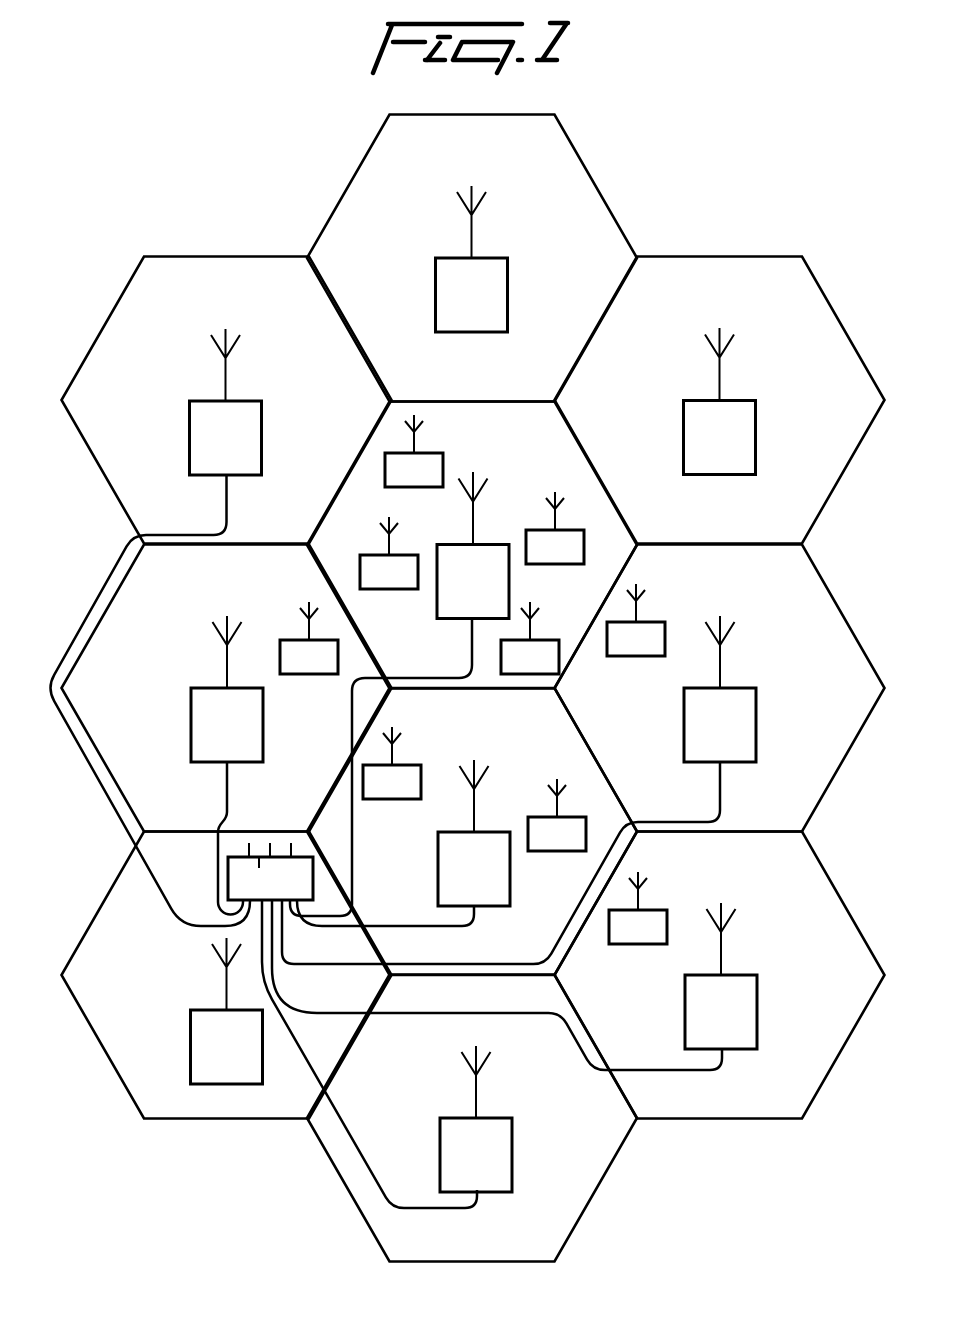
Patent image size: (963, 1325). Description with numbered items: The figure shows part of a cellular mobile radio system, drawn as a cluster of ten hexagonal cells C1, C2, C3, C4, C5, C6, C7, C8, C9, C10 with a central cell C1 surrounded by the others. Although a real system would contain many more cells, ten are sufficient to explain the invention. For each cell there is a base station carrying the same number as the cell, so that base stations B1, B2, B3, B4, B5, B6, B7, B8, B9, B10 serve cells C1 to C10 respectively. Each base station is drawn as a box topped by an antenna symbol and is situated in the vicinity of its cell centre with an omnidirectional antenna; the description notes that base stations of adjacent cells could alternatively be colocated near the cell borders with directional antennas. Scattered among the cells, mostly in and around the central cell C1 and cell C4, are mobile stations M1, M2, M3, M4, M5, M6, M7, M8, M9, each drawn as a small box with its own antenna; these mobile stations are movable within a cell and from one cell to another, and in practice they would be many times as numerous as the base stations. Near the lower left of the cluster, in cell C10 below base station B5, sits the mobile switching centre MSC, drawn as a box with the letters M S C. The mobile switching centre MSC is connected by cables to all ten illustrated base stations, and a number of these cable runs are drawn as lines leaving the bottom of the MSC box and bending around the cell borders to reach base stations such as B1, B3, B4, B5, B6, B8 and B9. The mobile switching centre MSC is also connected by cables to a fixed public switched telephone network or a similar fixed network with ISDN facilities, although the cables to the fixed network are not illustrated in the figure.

The cell C1 is at (412, 672).
The cell C2 is at (660, 528).
The cell C3 is at (660, 816).
The cell C4 is at (412, 959).
The cell C5 is at (166, 816).
The cell C6 is at (166, 528).
The cell C7 is at (412, 386).
The cell C8 is at (660, 1102).
The cell C9 is at (412, 1246).
The cell C10 is at (177, 1102).
The base station B1 is at (399, 694).
The base station B2 is at (720, 401).
The base station B3 is at (519, 790).
The base station B4 is at (403, 843).
The base station B5 is at (227, 765).
The base station B6 is at (156, 627).
The base station B7 is at (472, 259).
The base station B8 is at (514, 985).
The base station B9 is at (387, 1054).
The base station B10 is at (227, 1011).
The mobile station M1 is at (638, 908).
The mobile station M2 is at (309, 638).
The mobile station M3 is at (389, 553).
The mobile station M4 is at (555, 528).
The mobile station M5 is at (636, 620).
The mobile station M6 is at (414, 451).
The mobile station M7 is at (530, 638).
The mobile station M8 is at (557, 815).
The mobile station M9 is at (392, 763).
The mobile switching centre MSC is at (270, 873).